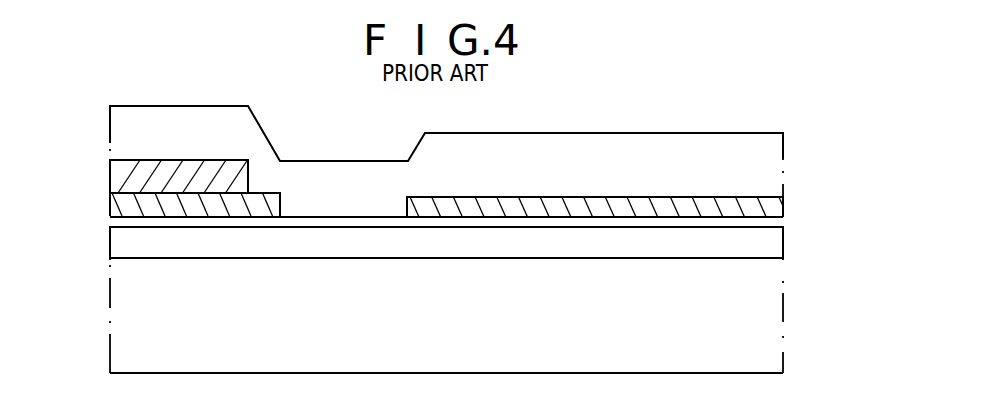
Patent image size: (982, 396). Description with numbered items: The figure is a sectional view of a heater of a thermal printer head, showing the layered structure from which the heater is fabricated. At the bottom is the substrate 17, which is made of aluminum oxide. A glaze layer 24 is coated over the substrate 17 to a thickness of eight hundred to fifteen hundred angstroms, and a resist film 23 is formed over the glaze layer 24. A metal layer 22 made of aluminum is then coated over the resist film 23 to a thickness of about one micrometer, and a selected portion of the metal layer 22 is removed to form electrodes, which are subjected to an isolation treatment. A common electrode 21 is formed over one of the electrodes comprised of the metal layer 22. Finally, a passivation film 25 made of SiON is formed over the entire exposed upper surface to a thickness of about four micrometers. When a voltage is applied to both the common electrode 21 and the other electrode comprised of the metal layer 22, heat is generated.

The substrate 17 is at (775, 327).
The common electrode 21 is at (138, 175).
The metal layer 22 is at (775, 210).
The resist film 23 is at (777, 223).
The glaze layer 24 is at (475, 245).
The passivation film 25 is at (600, 147).